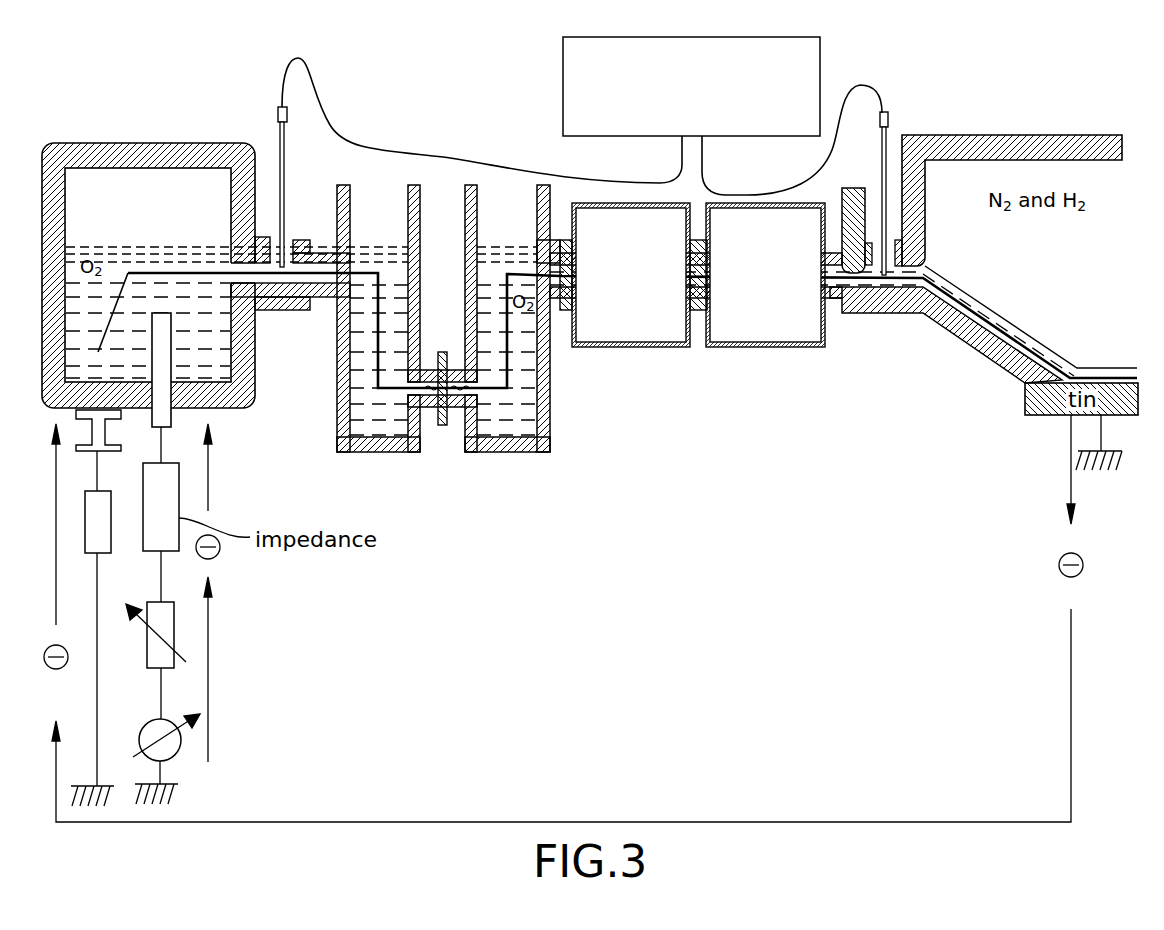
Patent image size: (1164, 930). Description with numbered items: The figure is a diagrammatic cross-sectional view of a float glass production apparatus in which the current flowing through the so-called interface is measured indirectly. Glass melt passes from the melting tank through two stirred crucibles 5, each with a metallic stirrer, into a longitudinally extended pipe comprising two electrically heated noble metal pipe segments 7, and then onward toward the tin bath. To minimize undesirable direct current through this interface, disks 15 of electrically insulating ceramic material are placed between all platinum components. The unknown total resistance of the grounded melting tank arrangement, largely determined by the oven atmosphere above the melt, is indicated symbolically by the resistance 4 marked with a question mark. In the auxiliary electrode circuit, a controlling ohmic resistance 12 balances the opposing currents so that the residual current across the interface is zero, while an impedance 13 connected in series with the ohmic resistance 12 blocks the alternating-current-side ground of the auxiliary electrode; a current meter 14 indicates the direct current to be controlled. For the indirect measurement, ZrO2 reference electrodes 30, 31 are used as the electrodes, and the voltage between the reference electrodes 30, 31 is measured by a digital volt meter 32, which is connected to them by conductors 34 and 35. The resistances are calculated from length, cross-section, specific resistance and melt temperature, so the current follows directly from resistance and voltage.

The resistance 4 is at (111, 525).
The stirred crucible 5 is at (382, 452).
The noble metal pipe segment 7 is at (785, 347).
The controlling ohmic resistance 12 is at (174, 635).
The impedance 13 is at (179, 495).
The current meter 14 is at (174, 753).
The disk 15 is at (443, 425).
The reference electrode 30 is at (278, 116).
The reference electrode 31 is at (888, 118).
The digital volt meter 32 is at (563, 82).
The conductor 34 is at (443, 154).
The conductor 35 is at (850, 82).